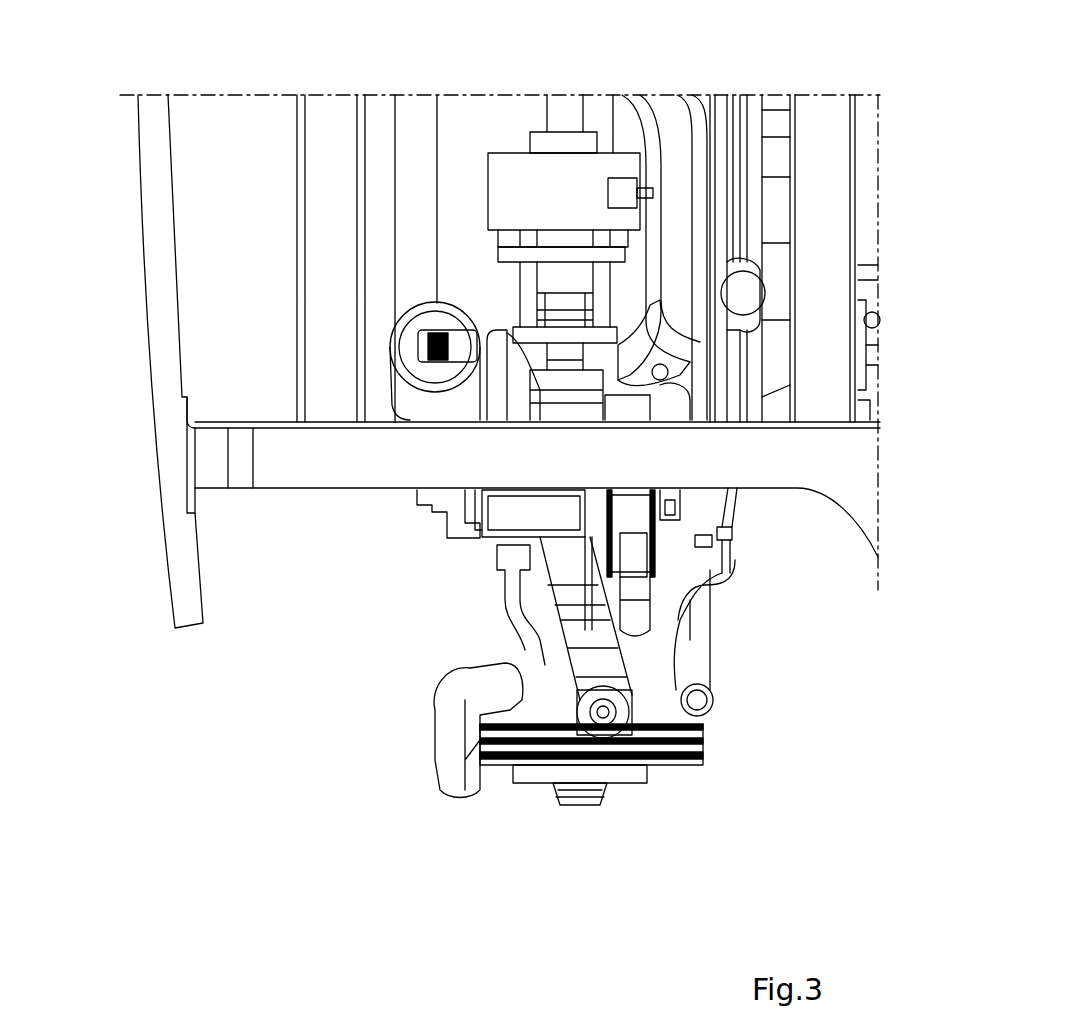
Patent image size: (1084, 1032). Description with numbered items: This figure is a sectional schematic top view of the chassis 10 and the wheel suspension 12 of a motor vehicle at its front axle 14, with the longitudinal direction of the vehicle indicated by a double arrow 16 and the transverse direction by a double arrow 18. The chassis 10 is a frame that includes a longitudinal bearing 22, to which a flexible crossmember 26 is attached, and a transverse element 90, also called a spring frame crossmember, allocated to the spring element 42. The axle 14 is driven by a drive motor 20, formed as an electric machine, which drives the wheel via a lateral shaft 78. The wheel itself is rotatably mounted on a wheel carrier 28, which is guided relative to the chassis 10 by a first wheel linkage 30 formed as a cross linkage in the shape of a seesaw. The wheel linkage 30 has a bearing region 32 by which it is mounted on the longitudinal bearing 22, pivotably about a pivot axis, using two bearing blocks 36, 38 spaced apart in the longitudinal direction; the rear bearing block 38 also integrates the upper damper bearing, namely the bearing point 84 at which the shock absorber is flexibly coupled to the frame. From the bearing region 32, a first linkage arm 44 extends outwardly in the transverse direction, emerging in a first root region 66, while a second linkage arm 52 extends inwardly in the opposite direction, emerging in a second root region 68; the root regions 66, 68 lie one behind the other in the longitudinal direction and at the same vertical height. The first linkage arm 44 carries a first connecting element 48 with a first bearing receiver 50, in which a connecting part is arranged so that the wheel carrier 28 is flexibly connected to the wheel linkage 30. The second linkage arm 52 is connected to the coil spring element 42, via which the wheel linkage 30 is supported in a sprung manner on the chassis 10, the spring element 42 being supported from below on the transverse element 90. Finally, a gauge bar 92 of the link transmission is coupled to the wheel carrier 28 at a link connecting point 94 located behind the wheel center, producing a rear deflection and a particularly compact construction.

The chassis 10 is at (165, 630).
The wheel suspension 12 is at (672, 777).
The axle 14 is at (866, 468).
The double arrow 16 is at (375, 843).
The double arrow 18 is at (120, 200).
The drive motor 20 is at (626, 141).
The longitudinal bearing 22 is at (312, 463).
The flexible crossmember 26 is at (148, 442).
The wheel carrier 28 is at (635, 684).
The first wheel linkage 30 is at (591, 663).
The bearing region 32 is at (537, 501).
The bearing block 36 is at (433, 500).
The bearing block 38 is at (667, 500).
The spring element 42 is at (388, 383).
The first linkage arm 44 is at (581, 618).
The first connecting element 48 is at (695, 748).
The first bearing receiver 50 is at (605, 705).
The second linkage arm 52 is at (481, 404).
The first root region 66 is at (594, 511).
The second root region 68 is at (510, 517).
The lateral shaft 78 is at (540, 400).
The bearing point 84 is at (668, 557).
The transverse element 90 is at (415, 140).
The gauge bar 92 is at (680, 623).
The link connecting point 94 is at (713, 705).